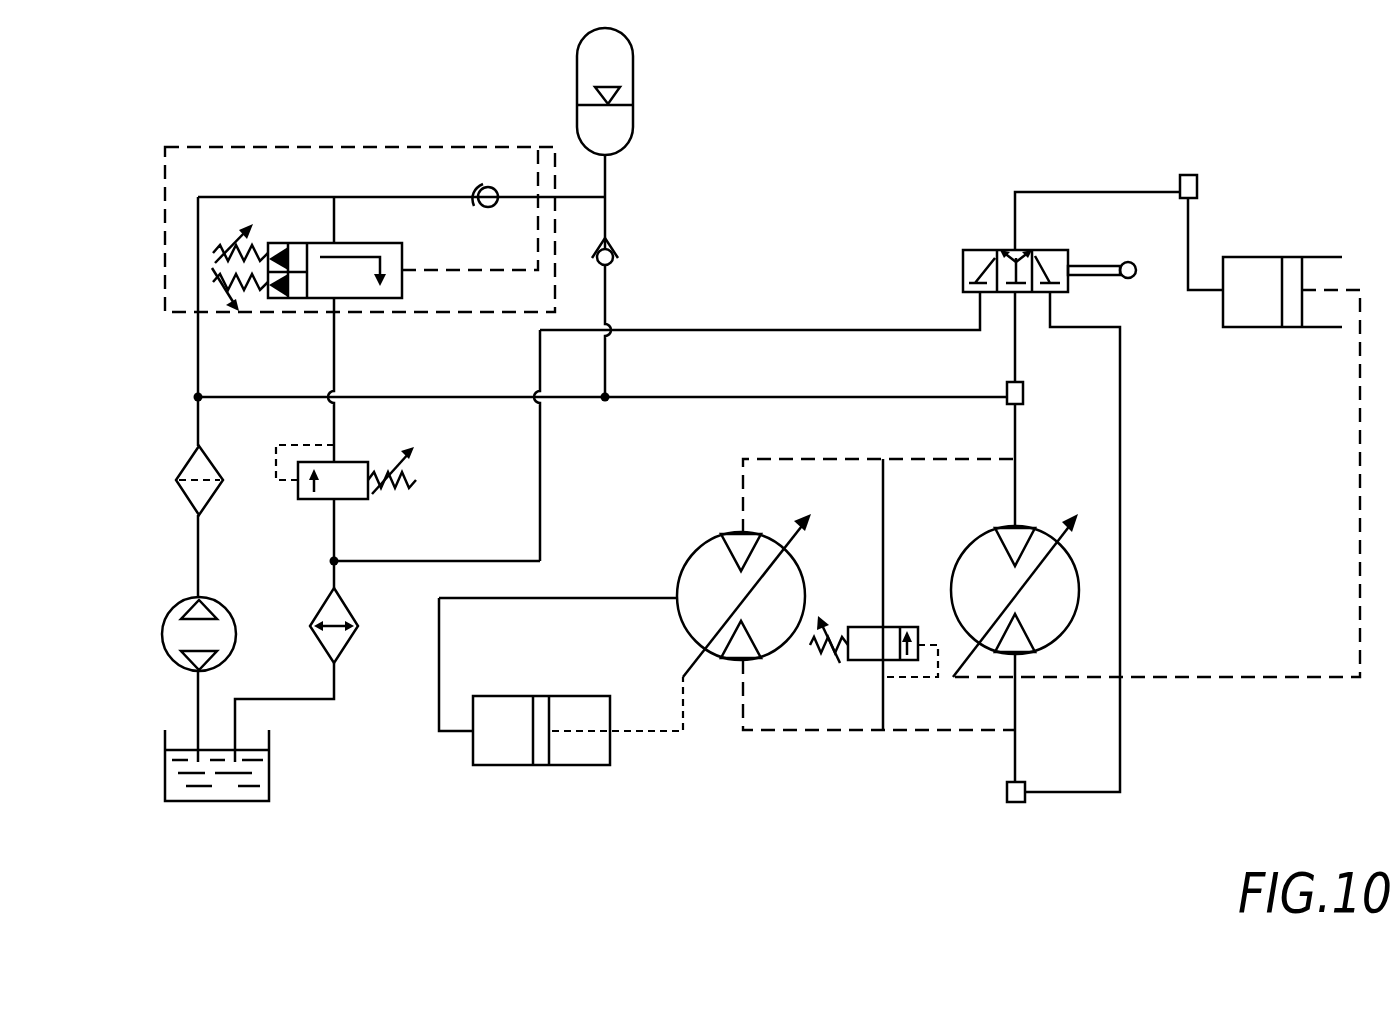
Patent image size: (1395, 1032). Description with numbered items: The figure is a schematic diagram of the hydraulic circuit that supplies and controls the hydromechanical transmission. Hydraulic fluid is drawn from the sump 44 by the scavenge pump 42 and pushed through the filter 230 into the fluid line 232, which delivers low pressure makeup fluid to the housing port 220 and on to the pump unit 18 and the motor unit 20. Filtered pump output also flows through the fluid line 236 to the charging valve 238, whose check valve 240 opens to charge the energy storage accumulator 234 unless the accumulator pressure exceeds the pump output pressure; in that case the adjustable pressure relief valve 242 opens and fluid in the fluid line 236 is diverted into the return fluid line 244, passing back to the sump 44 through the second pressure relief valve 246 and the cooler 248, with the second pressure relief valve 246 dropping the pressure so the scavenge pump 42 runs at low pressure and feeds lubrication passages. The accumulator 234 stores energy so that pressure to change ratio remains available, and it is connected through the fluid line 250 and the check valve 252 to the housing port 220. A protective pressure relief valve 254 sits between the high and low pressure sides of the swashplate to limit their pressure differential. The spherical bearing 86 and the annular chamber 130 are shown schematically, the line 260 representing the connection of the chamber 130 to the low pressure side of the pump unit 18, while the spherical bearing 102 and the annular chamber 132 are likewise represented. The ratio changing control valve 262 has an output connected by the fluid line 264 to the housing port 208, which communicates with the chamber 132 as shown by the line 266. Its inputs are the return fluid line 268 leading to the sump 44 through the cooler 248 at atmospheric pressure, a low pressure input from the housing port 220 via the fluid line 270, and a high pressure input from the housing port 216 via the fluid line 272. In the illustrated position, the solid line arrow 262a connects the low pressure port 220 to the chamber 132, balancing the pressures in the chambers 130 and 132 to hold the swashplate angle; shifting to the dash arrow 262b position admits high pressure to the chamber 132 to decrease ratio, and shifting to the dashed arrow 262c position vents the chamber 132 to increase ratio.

The pump unit 18 is at (795, 556).
The motor unit 20 is at (972, 531).
The scavenge pump 42 is at (164, 648).
The sump 44 is at (269, 776).
The spherical bearing 86 is at (541, 765).
The spherical bearing 102 is at (1290, 260).
The annular chamber 130 is at (496, 765).
The annular chamber 132 is at (1256, 320).
The housing port 208 is at (1192, 178).
The housing port 216 is at (1016, 802).
The housing port 220 is at (1025, 393).
The filter 230 is at (177, 480).
The fluid line 232 is at (440, 397).
The energy storage accumulator 234 is at (627, 89).
The fluid line 236 is at (290, 197).
The charging valve 238 is at (165, 285).
The check valve 240 is at (497, 205).
The adjustable pressure relief valve 242 is at (380, 243).
The return fluid line 244 is at (334, 357).
The second pressure relief valve 246 is at (352, 494).
The cooler 248 is at (337, 663).
The fluid line 250 is at (607, 218).
The check valve 252 is at (613, 262).
The pressure relief valve 254 is at (856, 660).
The line 260 is at (588, 598).
The ratio changing control valve 262 is at (1007, 272).
The solid line arrow 262a is at (1010, 292).
The dash arrow 262b is at (1053, 252).
The dashed arrow 262c is at (977, 268).
The fluid line 264 is at (1085, 192).
The line 266 is at (1190, 240).
The return fluid line 268 is at (777, 330).
The fluid line 270 is at (1018, 357).
The fluid line 272 is at (1122, 527).